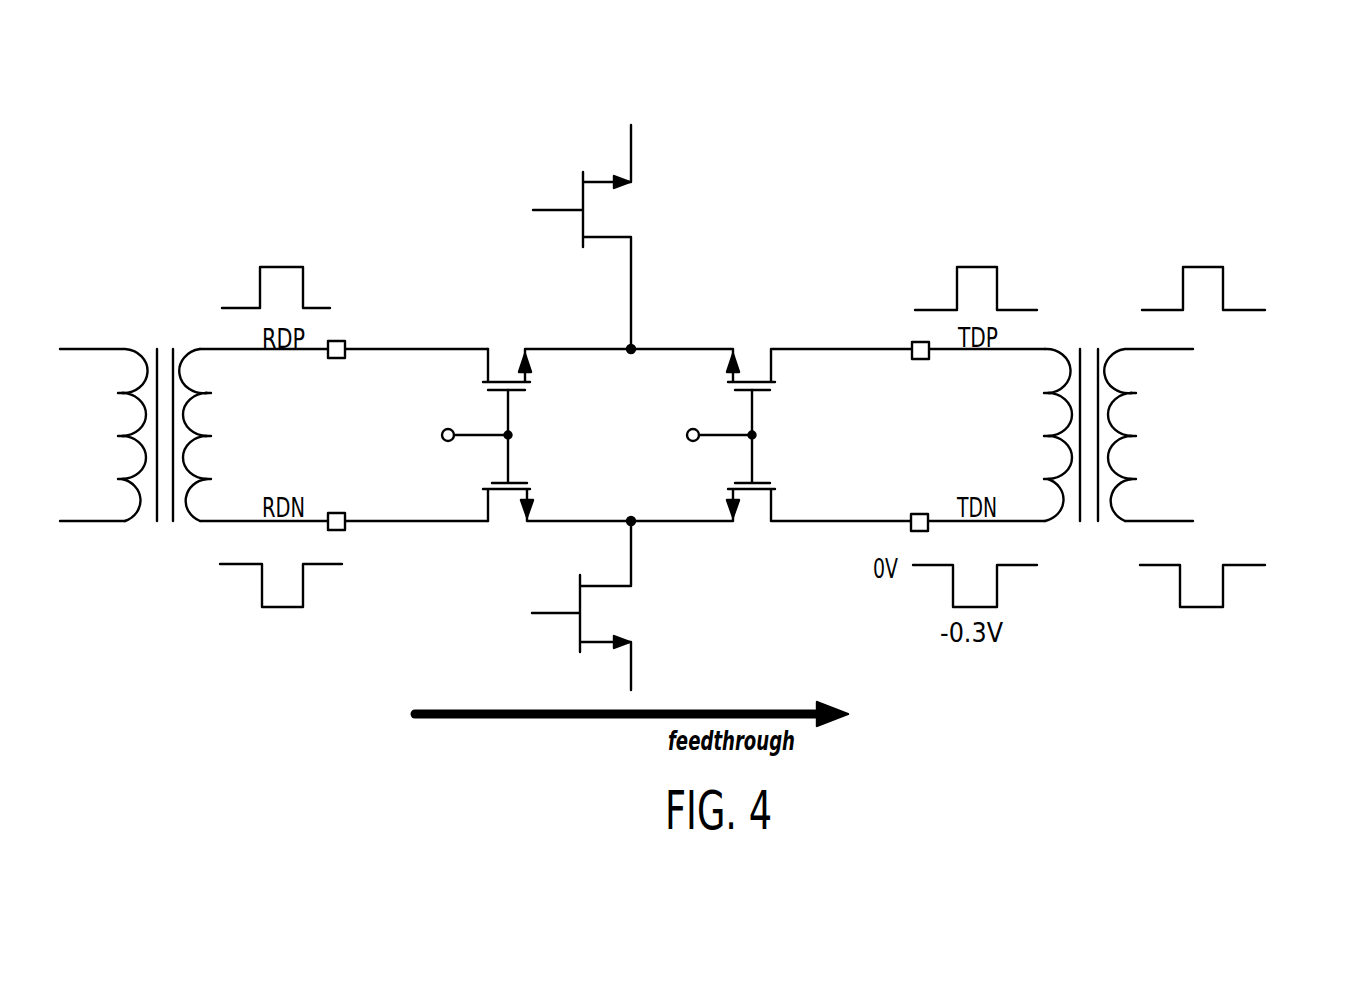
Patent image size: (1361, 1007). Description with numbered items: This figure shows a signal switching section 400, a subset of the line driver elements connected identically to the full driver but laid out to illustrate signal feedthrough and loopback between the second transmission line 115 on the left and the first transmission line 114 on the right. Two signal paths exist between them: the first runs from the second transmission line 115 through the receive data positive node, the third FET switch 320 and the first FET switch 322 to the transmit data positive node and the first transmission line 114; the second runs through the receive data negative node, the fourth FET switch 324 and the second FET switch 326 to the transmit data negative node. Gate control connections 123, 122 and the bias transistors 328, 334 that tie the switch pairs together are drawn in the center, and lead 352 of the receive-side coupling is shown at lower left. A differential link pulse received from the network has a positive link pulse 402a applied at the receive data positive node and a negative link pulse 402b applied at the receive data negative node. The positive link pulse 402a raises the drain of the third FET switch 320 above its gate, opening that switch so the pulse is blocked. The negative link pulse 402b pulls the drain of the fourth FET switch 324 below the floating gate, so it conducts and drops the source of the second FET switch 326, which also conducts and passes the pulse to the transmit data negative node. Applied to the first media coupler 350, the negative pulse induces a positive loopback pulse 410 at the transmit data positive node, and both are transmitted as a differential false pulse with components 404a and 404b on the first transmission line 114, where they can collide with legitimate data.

The signal switching section 400 is at (1120, 90).
The second transmission line 115 is at (135, 435).
The first transmission line 114 is at (1120, 435).
The receive transformer lead 352 is at (124, 521).
The first media coupler 350 is at (1127, 522).
The positive link pulse 402a is at (330, 307).
The negative link pulse 402b is at (318, 566).
The third FET switch 320 is at (503, 380).
The fourth FET switch 324 is at (513, 482).
The first FET switch 322 is at (748, 380).
The second FET switch 326 is at (760, 482).
The control node 123 is at (508, 406).
The control node 122 is at (752, 406).
The bias transistor 328 is at (603, 239).
The bias transistor 334 is at (602, 603).
The positive loopback pulse 410 is at (1000, 288).
The false pulse component 404a is at (1226, 290).
The false pulse component 404b is at (1225, 587).